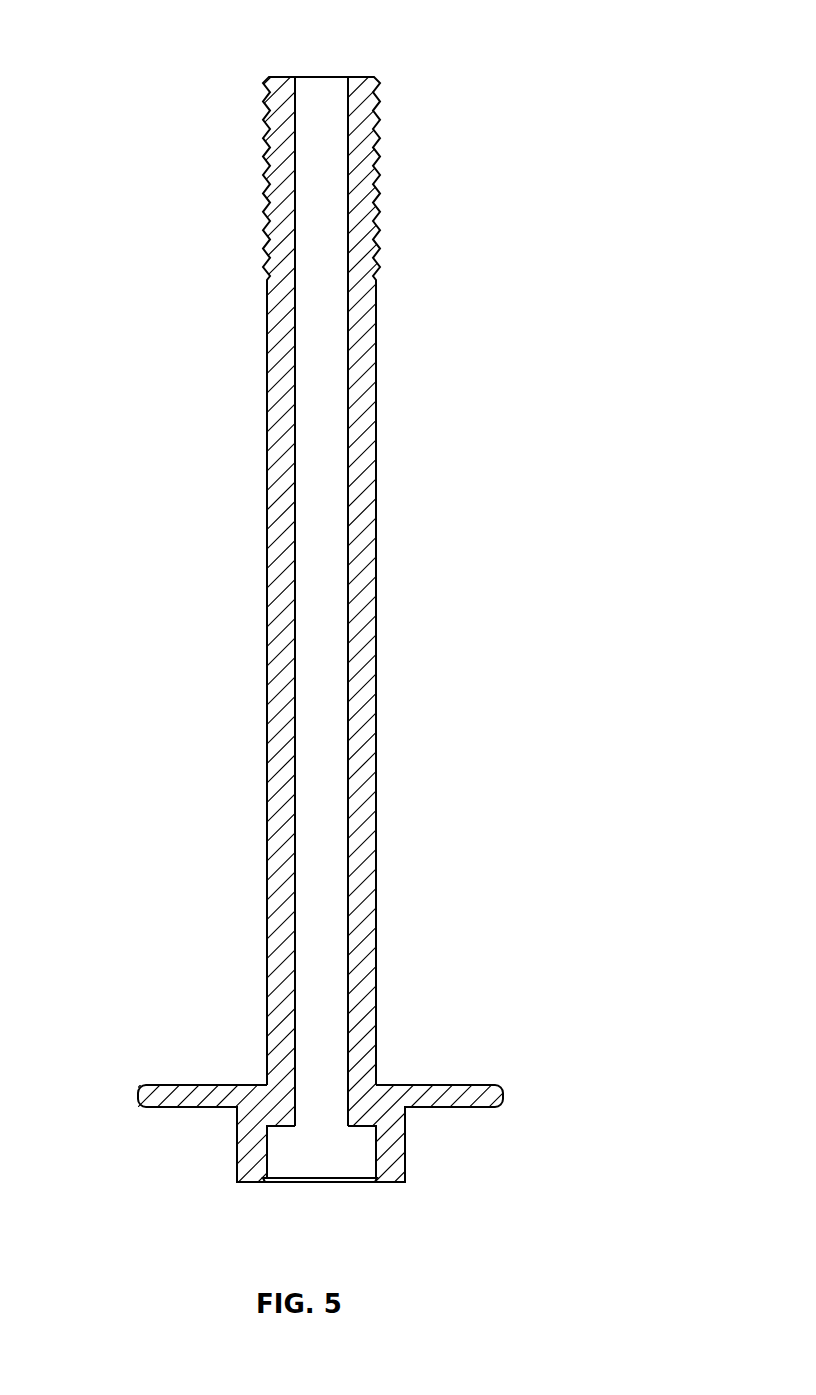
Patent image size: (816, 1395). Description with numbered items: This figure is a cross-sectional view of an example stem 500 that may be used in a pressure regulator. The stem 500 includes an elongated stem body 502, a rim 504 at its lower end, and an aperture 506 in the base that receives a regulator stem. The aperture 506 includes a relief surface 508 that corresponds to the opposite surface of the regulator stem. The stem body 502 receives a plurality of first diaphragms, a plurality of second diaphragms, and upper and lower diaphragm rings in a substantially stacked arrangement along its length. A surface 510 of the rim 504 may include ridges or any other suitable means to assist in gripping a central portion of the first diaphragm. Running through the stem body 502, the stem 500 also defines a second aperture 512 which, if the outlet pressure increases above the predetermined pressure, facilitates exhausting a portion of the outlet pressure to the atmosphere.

The stem 500 is at (114, 43).
The stem body 502 is at (375, 343).
The rim 504 is at (453, 1088).
The aperture 506 is at (268, 1143).
The relief surface 508 is at (333, 1127).
The surface 510 is at (153, 1085).
The second aperture 512 is at (328, 157).